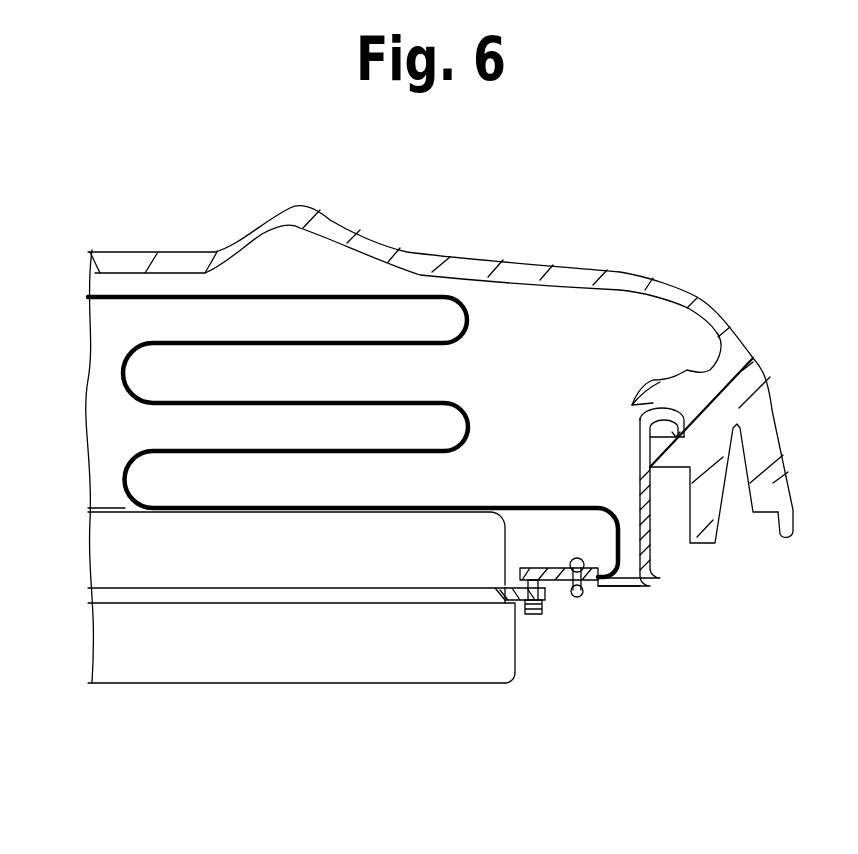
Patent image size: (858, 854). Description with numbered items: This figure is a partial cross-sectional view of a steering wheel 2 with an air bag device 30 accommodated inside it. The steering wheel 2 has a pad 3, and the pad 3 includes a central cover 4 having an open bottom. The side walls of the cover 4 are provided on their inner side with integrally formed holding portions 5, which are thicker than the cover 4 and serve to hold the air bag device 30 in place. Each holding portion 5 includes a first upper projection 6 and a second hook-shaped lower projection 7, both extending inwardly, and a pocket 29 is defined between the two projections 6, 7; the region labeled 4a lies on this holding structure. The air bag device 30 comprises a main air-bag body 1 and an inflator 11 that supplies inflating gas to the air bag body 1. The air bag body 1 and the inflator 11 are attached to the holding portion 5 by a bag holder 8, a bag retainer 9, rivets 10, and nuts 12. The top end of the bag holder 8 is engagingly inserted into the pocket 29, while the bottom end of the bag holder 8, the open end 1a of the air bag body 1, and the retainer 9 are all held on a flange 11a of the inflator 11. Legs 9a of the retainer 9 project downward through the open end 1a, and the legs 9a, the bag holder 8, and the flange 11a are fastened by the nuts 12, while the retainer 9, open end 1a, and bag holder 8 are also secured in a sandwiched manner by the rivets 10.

The main air-bag body 1 is at (447, 347).
The open end 1a is at (600, 575).
The steering wheel 2 is at (585, 246).
The pad 3 is at (785, 233).
The central cover 4 is at (673, 290).
The leg portion 4a is at (775, 478).
The holding portion 5 is at (768, 378).
The first upper projection 6 is at (687, 373).
The second hook-shaped lower projection 7 is at (653, 447).
The bag holder 8 is at (645, 565).
The bag retainer 9 is at (527, 568).
The legs 9a is at (520, 580).
The rivets 10 is at (586, 591).
The inflator 11 is at (473, 675).
The flange 11a is at (475, 597).
The nuts 12 is at (543, 605).
The pocket 29 is at (672, 437).
The air bag device 30 is at (503, 443).